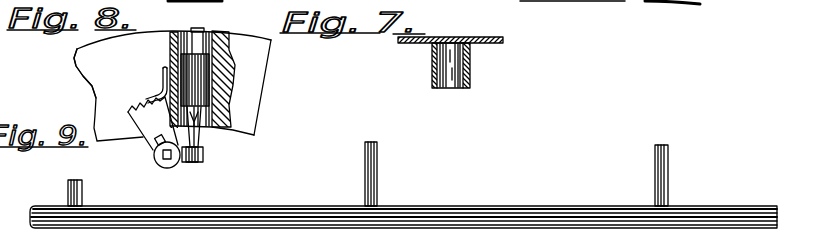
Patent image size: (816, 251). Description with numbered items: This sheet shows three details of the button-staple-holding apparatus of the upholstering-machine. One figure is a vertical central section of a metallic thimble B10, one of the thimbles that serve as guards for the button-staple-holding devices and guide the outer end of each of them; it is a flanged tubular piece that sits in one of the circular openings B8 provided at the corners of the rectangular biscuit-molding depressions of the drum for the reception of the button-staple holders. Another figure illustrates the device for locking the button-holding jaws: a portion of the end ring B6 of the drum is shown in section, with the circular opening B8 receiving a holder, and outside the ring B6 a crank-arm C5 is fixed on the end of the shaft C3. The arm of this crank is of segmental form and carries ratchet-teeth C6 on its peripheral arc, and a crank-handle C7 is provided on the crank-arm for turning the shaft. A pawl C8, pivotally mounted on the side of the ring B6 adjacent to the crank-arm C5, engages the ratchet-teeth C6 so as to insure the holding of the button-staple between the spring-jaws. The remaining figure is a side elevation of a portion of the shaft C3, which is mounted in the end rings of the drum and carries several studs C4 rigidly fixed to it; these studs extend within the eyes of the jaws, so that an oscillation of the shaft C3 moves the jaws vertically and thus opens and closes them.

In FIG. 8, the end ring B6 is at (248, 70).
In FIG. 8, the circular opening B8 is at (209, 122).
In FIG. 7, the thimble B10 is at (470, 62).
In FIG. 9, the shaft C3 is at (468, 218).
In FIG. 9, the stud C4 is at (82, 193).
In FIG. 8, the crank-arm C5 is at (153, 142).
In FIG. 8, the ratchet-teeth C6 is at (130, 112).
In FIG. 8, the crank-handle C7 is at (153, 123).
In FIG. 8, the pawl C8 is at (155, 83).